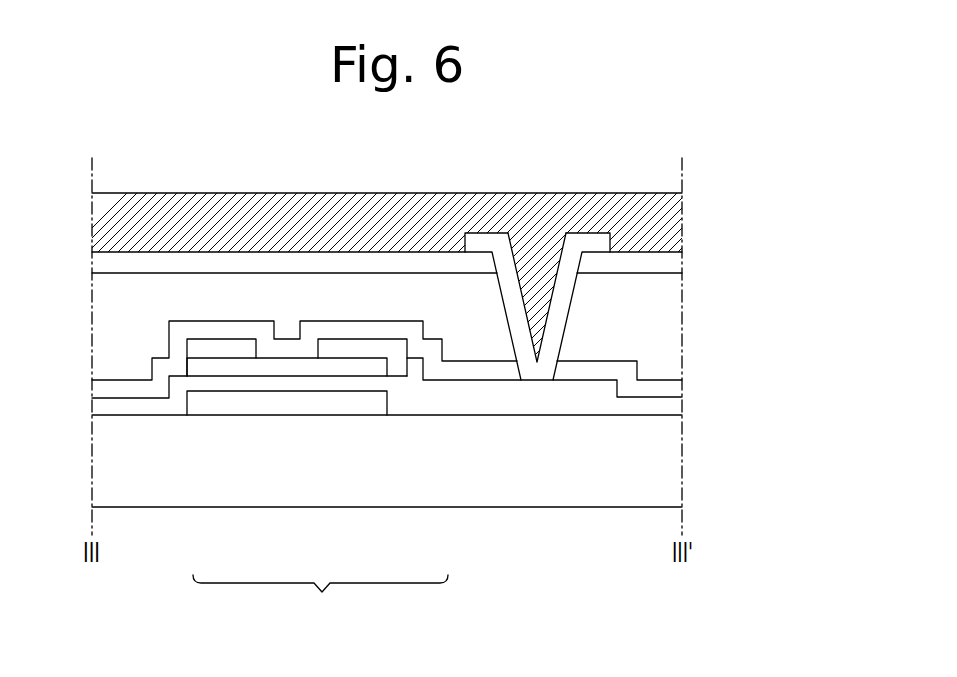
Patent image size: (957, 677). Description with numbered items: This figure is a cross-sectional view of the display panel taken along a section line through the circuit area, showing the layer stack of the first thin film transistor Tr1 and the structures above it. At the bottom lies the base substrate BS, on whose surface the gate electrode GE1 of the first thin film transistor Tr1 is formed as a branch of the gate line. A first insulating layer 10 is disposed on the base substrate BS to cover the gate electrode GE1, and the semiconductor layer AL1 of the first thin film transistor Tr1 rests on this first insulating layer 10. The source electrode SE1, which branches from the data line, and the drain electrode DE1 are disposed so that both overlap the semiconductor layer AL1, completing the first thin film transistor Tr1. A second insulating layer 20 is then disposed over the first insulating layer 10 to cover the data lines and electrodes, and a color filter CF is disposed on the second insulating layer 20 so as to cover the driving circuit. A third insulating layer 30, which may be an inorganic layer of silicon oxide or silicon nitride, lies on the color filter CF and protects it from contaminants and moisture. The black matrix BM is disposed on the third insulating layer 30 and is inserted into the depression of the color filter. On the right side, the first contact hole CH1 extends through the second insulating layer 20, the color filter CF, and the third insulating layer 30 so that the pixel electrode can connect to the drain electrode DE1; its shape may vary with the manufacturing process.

The black matrix BM is at (678, 215).
The third insulating layer 30 is at (673, 262).
The color filter CF is at (673, 298).
The first contact hole CH1 is at (553, 327).
The second insulating layer 20 is at (673, 388).
The first insulating layer 10 is at (673, 405).
The base substrate BS is at (673, 462).
The gate electrode GE1 is at (357, 406).
The semiconductor layer AL1 is at (285, 365).
The source electrode SE1 is at (220, 348).
The drain electrode DE1 is at (437, 388).
The first thin film transistor Tr1 is at (320, 598).